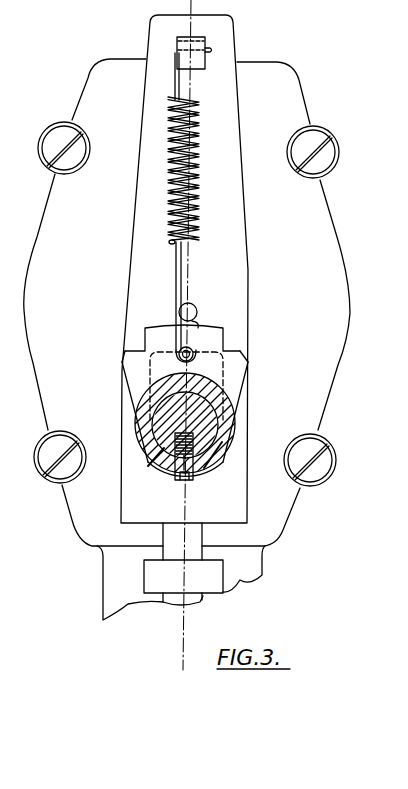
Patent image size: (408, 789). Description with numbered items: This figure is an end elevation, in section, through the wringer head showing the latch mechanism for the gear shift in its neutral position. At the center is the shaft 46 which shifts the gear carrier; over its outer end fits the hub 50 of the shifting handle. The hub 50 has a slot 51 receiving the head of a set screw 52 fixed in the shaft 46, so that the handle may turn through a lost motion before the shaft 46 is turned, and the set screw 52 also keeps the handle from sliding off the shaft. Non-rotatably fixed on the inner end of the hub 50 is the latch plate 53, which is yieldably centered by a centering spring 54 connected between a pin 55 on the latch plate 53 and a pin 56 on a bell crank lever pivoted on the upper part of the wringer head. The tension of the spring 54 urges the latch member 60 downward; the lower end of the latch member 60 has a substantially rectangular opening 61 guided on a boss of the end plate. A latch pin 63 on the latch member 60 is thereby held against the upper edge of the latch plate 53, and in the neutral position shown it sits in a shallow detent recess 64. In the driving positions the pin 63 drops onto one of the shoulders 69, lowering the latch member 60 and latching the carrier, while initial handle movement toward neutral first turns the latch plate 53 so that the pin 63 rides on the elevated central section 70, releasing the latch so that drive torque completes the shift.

The shaft 46 is at (156, 437).
The hub 50 is at (137, 420).
The slot 51 is at (152, 469).
The set screw head 52 is at (192, 468).
The latch plate 53 is at (220, 335).
The centering spring 54 is at (200, 210).
The pin 55 is at (192, 350).
The pin 56 is at (180, 52).
The latch member 60 is at (235, 134).
The rectangular opening 61 is at (165, 480).
The latch pin 63 is at (193, 306).
The detent recess 64 is at (198, 325).
The shoulders 69 is at (135, 352).
The elevated central section 70 is at (162, 327).